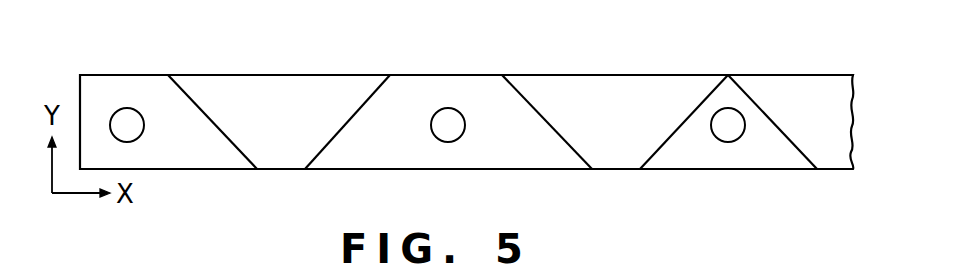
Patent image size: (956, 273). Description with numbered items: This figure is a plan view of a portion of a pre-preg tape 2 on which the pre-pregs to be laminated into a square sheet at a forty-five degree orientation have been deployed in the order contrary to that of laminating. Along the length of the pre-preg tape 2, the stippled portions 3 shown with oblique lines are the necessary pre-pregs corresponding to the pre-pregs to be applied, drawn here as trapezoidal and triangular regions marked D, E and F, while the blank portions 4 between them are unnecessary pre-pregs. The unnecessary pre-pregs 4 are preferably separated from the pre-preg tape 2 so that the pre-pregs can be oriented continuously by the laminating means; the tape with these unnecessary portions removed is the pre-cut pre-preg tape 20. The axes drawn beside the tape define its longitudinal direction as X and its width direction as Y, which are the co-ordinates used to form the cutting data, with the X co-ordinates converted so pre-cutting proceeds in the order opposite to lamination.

The pre-preg tape 2 is at (796, 60).
The necessary pre-preg portion 3 is at (122, 85).
The unnecessary pre-preg portion 4 is at (280, 87).
The pre-cut pre-preg tape 20 is at (574, 63).